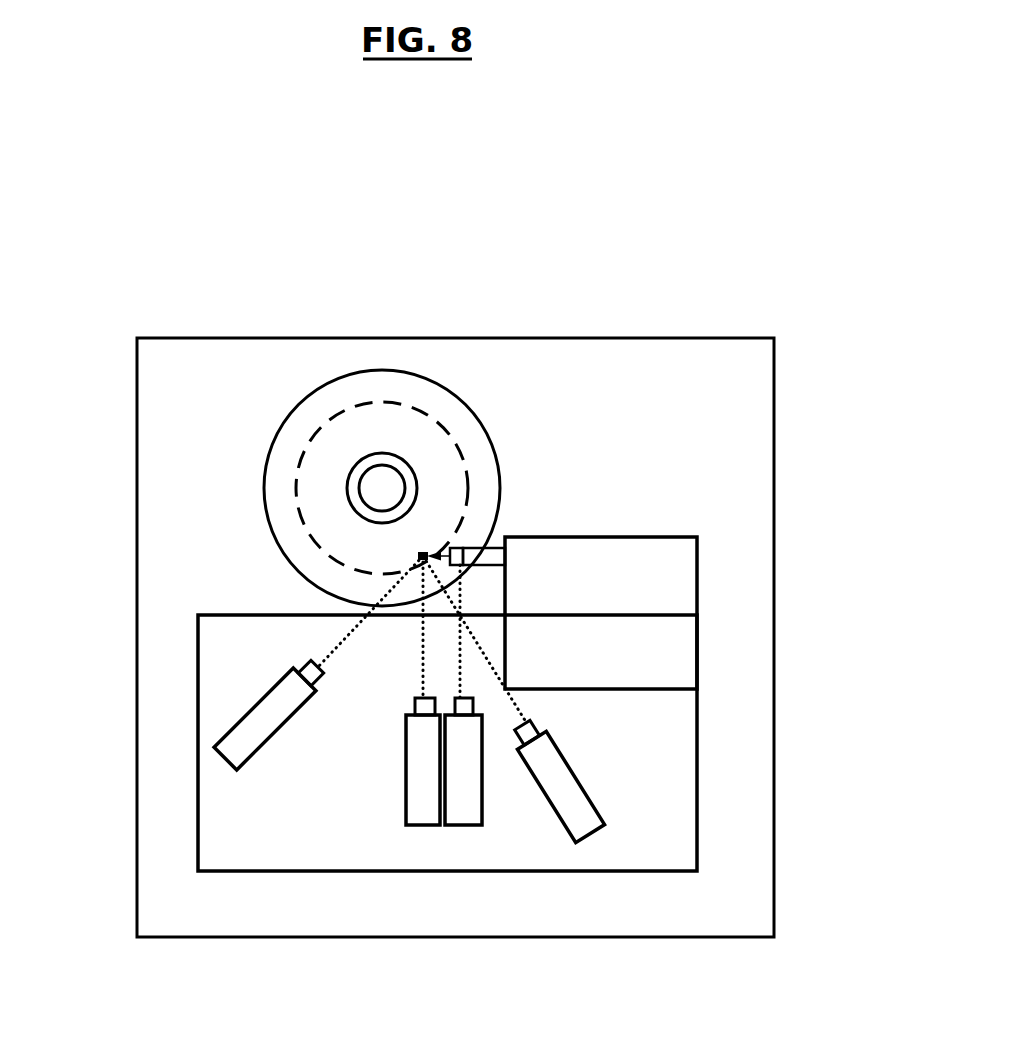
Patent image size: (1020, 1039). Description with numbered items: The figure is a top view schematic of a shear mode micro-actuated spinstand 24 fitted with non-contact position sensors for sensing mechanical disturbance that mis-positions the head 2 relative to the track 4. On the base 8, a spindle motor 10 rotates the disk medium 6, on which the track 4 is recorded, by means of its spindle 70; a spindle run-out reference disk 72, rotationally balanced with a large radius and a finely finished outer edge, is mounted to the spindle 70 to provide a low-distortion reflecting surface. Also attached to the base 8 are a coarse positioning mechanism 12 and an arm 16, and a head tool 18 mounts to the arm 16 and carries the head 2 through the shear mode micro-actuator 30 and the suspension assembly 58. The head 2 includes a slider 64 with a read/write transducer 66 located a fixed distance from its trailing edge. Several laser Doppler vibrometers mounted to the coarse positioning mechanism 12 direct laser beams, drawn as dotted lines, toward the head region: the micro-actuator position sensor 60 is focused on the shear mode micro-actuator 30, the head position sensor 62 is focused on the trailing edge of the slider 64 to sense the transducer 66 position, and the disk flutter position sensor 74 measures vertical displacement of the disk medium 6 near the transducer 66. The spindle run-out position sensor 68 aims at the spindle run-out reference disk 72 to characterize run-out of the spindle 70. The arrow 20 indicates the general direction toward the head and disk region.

The shear mode micro-actuated spinstand 24 is at (170, 191).
The base 8 is at (710, 450).
The head 2 is at (258, 436).
The disk medium 6 is at (306, 410).
The track 4 is at (350, 393).
The spindle run-out reference disk 72 is at (347, 474).
The spindle motor 10 is at (210, 488).
The spindle 70 is at (380, 490).
The direction of disc rotation/insertion 20 is at (541, 451).
The arm 16 is at (650, 573).
The coarse positioning mechanism 12 is at (250, 797).
The head tool 18 is at (475, 553).
The shear mode micro-actuator 30 is at (458, 547).
The suspension assembly 58 is at (445, 548).
The read/write transducer 66 is at (420, 551).
The slider 64 is at (231, 663).
The disk flutter position sensor 74 is at (250, 735).
The head position sensor 62 is at (422, 812).
The micro-actuator position sensor 60 is at (462, 812).
The spindle run-out position sensor 68 is at (573, 812).